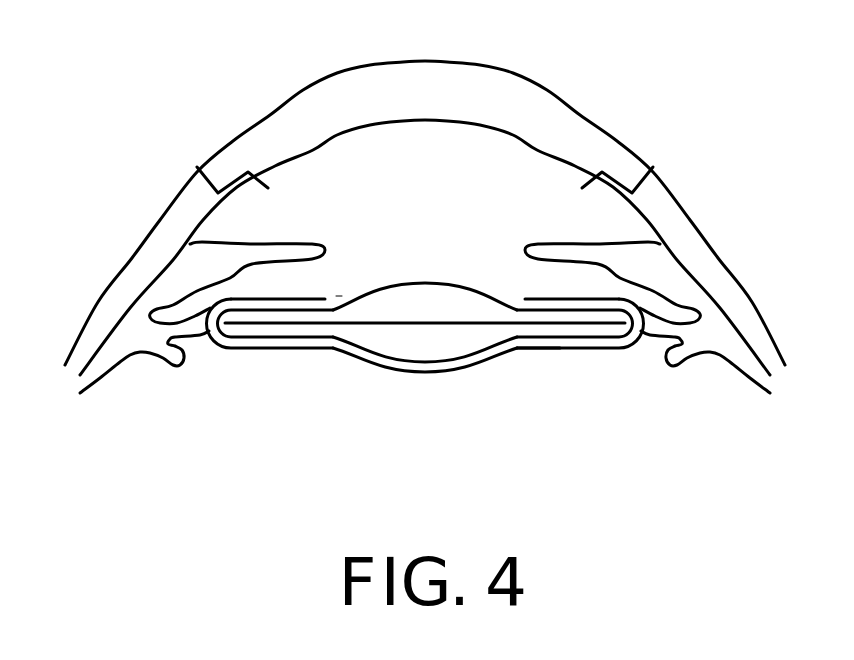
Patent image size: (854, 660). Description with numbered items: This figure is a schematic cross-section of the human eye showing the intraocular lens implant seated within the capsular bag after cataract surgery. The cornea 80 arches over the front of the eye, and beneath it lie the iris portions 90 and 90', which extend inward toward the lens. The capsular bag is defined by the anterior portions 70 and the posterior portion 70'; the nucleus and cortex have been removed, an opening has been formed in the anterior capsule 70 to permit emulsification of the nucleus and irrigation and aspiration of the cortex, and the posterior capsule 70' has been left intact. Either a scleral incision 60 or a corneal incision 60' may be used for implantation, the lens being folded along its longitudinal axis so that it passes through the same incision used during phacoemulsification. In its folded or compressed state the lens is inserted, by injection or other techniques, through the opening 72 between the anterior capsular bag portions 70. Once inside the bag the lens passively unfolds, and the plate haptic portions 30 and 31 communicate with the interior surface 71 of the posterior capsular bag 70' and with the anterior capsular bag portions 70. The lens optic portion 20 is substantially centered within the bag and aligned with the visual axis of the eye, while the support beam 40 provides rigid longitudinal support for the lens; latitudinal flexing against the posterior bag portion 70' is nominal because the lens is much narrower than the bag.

The lens optic portion 20 is at (400, 357).
The plate haptic portion 30 is at (583, 315).
The plate haptic portion 31 is at (228, 348).
The support beam 40 is at (262, 315).
The scleral incision 60 is at (232, 133).
The corneal incision 60' is at (627, 143).
The anterior portion of the capsular bag 70 is at (393, 238).
The posterior portion of the capsular bag 70' is at (425, 410).
The interior surface of the posterior capsular bag 71 is at (535, 354).
The opening 72 is at (339, 284).
The cornea 80 is at (427, 80).
The iris portion 90 is at (647, 264).
The iris portion 90' is at (202, 259).